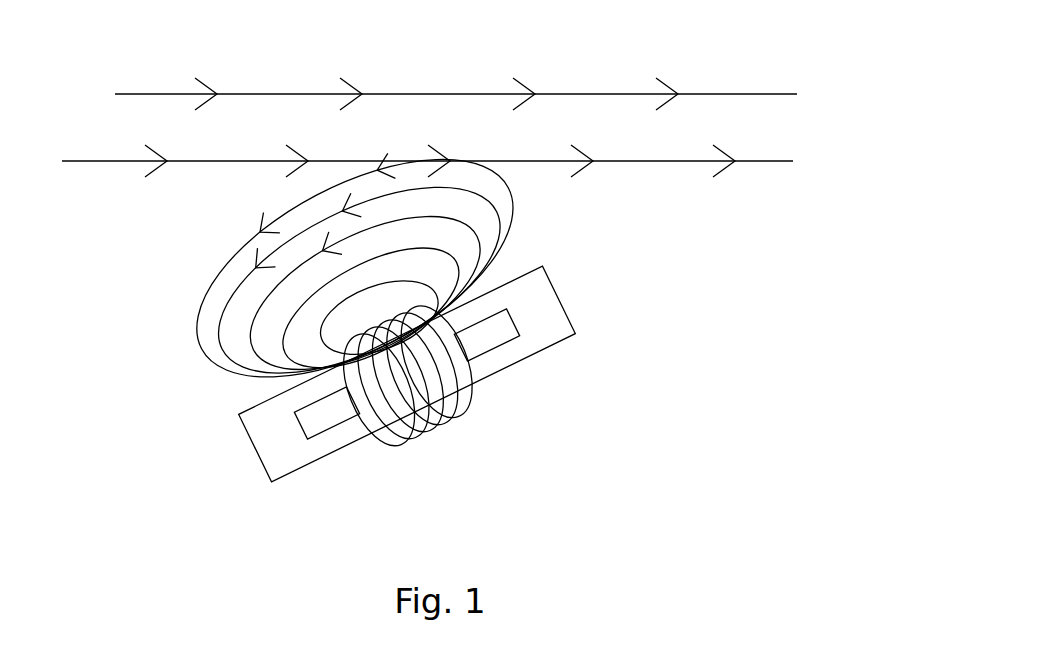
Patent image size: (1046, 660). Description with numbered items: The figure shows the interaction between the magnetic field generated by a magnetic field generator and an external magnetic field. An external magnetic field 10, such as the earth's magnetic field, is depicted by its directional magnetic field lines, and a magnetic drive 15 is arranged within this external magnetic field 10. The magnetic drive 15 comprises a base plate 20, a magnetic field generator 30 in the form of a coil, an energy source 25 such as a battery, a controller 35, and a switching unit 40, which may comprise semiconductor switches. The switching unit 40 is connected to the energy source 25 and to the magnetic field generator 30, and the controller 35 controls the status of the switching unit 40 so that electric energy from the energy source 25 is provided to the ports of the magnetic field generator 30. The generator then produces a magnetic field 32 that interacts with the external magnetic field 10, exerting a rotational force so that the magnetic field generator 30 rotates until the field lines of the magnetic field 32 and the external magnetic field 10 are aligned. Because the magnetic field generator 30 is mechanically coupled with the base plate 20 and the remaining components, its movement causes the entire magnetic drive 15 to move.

The external magnetic field 10 is at (738, 94).
The magnetic drive 15 is at (193, 338).
The base plate 20 is at (547, 310).
The energy source 25 is at (507, 333).
The magnetic field generator 30 is at (385, 437).
The magnetic field 32 is at (230, 263).
The controller 35 is at (308, 423).
The switching unit 40 is at (453, 368).